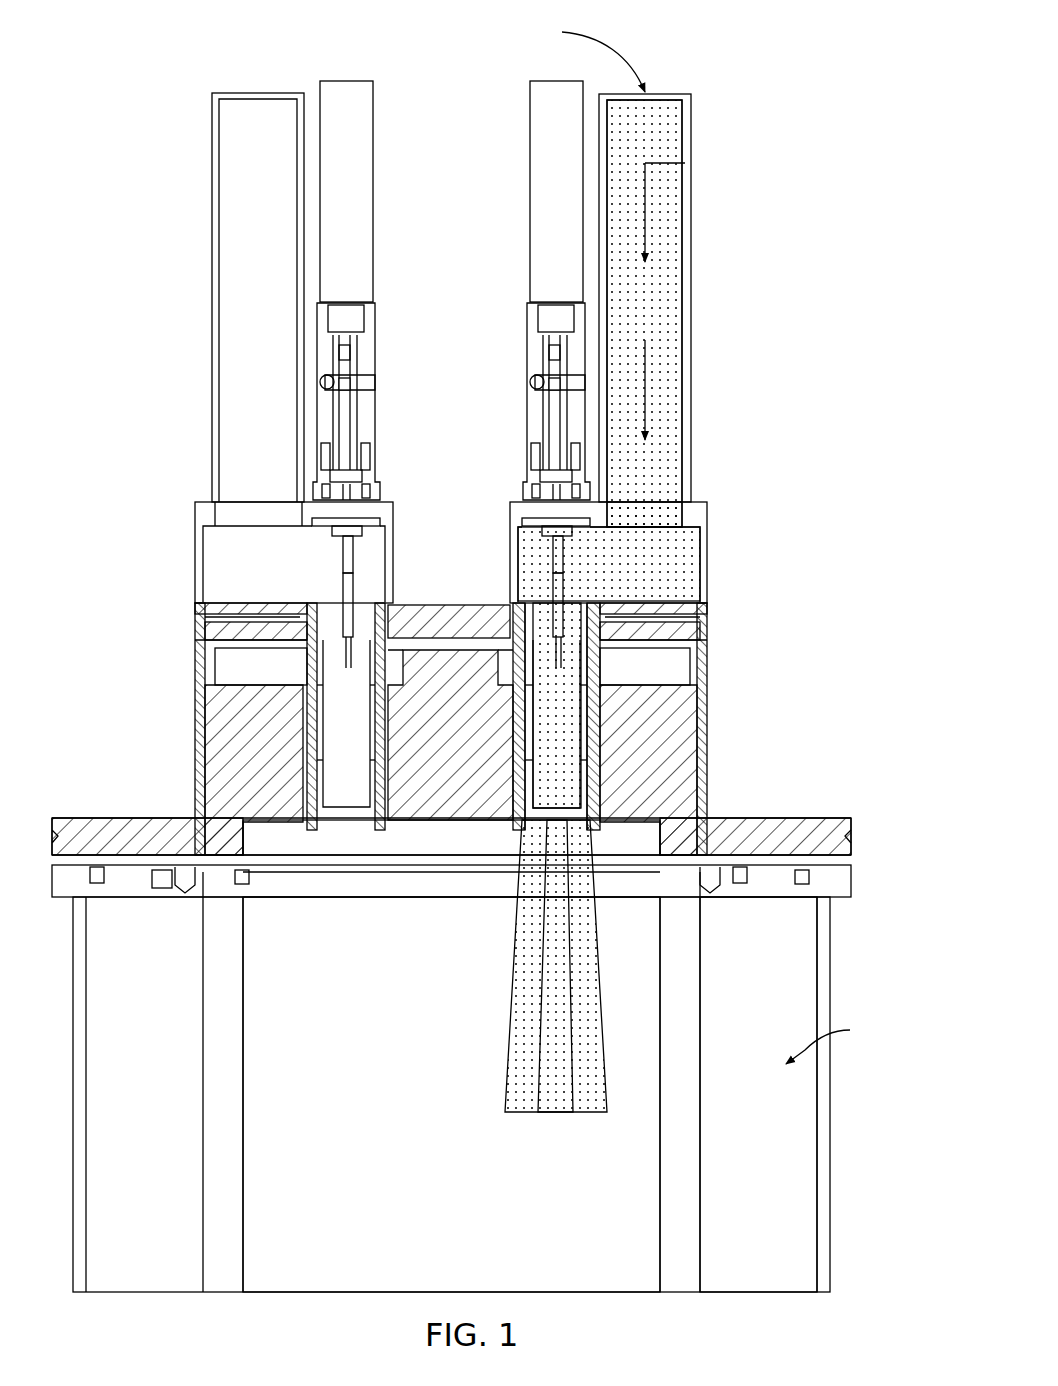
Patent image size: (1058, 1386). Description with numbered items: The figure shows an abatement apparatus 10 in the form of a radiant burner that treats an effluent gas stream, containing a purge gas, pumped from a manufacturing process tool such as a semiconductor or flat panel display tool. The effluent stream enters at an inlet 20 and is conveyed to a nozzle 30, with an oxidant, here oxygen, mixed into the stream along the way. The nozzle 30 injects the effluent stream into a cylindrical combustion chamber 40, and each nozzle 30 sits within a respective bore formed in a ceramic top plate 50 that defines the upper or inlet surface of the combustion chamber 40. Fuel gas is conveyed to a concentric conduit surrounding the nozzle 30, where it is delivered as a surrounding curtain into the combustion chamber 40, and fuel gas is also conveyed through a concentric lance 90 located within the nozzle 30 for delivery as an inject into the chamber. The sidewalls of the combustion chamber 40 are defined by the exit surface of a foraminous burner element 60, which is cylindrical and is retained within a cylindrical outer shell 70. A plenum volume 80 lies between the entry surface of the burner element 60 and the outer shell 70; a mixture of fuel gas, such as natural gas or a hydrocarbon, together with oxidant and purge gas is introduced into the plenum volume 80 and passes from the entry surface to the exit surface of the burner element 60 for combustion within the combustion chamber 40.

The abatement apparatus 10 is at (128, 158).
The inlet 20 is at (668, 92).
The nozzle 30 is at (560, 810).
The combustion chamber 40 is at (468, 1231).
The ceramic top plate 50 is at (230, 752).
The foraminous burner element 60 is at (200, 1170).
The cylindrical outer shell 70 is at (72, 982).
The plenum volume 80 is at (780, 1231).
The concentric lance 90 is at (555, 556).